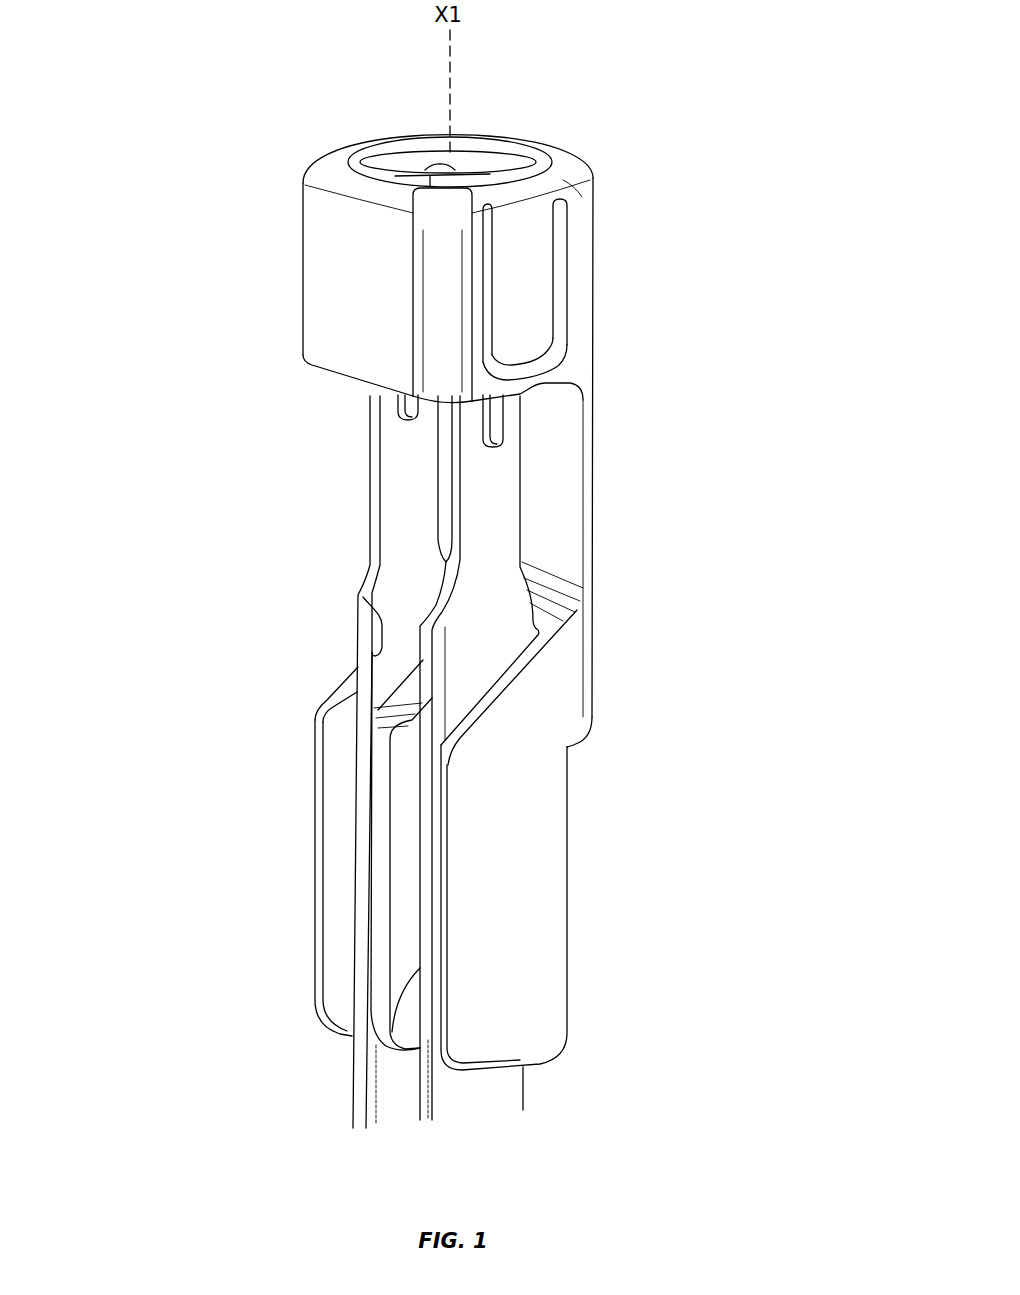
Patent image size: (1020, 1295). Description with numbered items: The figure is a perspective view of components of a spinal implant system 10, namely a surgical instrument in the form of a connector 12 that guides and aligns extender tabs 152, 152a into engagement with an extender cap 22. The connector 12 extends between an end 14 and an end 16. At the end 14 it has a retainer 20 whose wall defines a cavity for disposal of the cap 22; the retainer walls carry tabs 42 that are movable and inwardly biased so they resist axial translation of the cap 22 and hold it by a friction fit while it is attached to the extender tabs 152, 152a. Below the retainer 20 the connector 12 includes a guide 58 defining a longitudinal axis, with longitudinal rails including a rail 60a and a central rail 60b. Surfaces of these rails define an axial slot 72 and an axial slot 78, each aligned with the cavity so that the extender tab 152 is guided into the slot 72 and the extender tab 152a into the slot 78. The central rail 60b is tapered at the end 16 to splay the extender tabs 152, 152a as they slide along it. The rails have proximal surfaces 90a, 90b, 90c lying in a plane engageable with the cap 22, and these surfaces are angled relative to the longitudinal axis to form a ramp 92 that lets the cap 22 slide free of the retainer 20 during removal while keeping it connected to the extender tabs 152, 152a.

The spinal implant system 10 is at (130, 138).
The connector 12 is at (732, 473).
The end 14 is at (618, 155).
The end 16 is at (582, 1058).
The retainer 20 is at (262, 272).
The extender cap 22 is at (472, 173).
The tabs 42 is at (518, 310).
The guide 58 is at (647, 891).
The rail 60a is at (318, 918).
The rail 60b is at (400, 885).
The axial slot 72 is at (343, 1043).
The axial slot 78 is at (457, 1082).
The proximal surface 90a is at (335, 692).
The proximal surface 90b is at (407, 697).
The proximal surface 90c is at (493, 713).
The ramp 92 is at (538, 664).
The extender tab 152 is at (400, 553).
The extender tab 152a is at (483, 555).